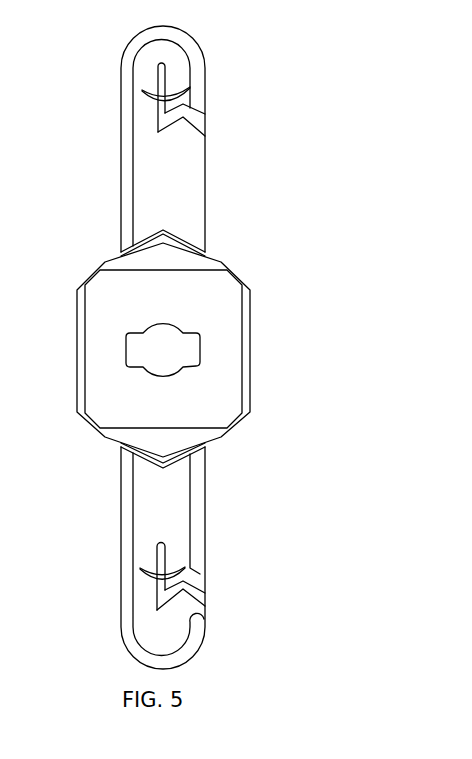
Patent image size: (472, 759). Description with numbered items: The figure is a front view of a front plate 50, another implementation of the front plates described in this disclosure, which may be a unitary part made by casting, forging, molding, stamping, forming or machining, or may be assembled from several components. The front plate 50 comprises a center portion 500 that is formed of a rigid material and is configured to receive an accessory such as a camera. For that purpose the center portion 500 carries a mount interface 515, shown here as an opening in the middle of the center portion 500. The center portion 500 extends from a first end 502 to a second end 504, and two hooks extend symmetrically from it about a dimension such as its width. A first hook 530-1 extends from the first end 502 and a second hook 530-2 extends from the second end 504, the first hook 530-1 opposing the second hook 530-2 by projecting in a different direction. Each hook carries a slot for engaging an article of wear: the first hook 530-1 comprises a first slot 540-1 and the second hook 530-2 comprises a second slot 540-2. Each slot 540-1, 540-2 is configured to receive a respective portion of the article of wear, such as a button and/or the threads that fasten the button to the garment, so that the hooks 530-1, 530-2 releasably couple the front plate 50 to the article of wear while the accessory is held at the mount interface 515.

The front plate 50 is at (328, 68).
The center portion 500 is at (77, 323).
The first end 502 is at (112, 255).
The second end 504 is at (217, 445).
The mount interface 515 is at (191, 345).
The first hook 530-1 is at (121, 110).
The second hook 530-2 is at (121, 617).
The first slot 540-1 is at (173, 68).
The second slot 540-2 is at (154, 551).